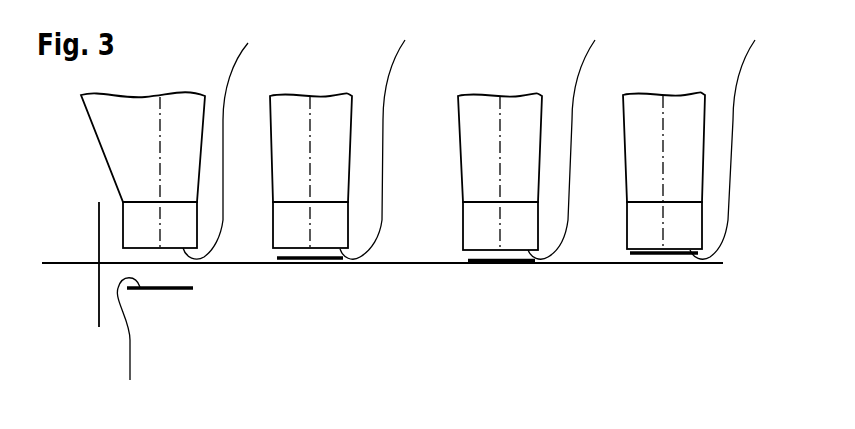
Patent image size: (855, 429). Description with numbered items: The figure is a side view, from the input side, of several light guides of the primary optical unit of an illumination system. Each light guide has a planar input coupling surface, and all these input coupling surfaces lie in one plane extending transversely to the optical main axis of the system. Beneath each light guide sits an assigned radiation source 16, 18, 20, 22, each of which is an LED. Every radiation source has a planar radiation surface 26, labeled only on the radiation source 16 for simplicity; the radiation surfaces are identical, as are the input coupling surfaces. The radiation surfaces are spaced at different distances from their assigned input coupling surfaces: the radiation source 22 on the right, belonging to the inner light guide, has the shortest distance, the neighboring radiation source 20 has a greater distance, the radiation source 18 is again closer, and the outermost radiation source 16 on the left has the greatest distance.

The radiation source 16 is at (168, 292).
The radiation source 18 is at (312, 263).
The radiation source 20 is at (497, 266).
The radiation source 22 is at (660, 255).
The radiation surface 26 is at (127, 343).